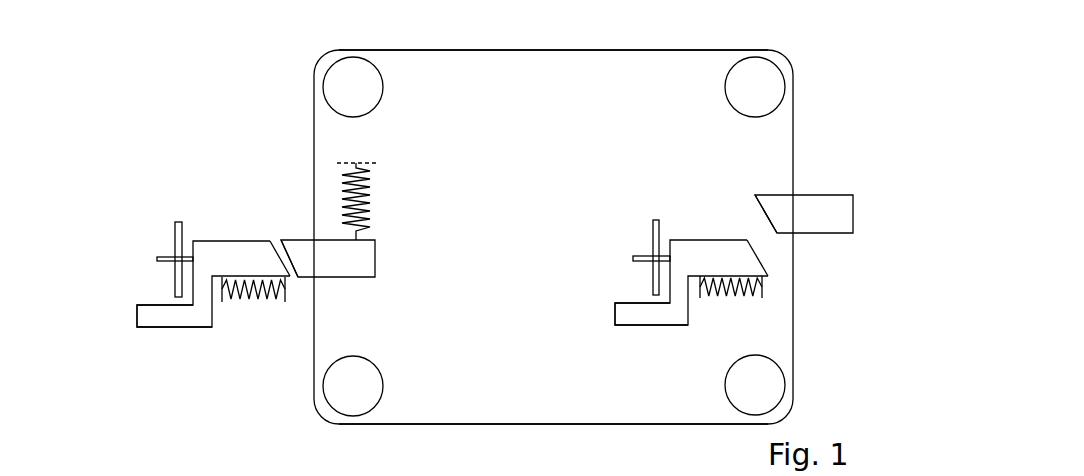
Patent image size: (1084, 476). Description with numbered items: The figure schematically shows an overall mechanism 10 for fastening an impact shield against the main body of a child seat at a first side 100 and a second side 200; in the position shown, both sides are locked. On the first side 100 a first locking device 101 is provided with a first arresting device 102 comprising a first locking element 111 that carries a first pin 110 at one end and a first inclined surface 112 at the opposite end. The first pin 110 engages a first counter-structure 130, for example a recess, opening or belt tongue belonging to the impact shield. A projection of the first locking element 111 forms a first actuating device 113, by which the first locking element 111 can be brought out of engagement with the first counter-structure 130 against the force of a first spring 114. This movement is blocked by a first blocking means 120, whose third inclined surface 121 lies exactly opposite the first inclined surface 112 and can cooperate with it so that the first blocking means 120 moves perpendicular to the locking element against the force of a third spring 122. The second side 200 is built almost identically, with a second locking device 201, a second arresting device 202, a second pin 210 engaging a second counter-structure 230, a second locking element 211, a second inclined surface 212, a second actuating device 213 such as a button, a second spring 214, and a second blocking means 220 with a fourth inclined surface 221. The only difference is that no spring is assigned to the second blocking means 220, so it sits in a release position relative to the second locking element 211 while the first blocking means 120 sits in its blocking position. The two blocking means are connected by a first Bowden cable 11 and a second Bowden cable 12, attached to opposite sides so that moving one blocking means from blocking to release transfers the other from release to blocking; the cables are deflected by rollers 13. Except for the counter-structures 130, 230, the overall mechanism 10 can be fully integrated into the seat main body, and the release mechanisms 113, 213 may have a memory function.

The overall mechanism 10 is at (275, 117).
The first Bowden cable 11 is at (543, 50).
The second Bowden cable 12 is at (477, 424).
The deflection roller 13 is at (350, 68).
The first side 100 is at (300, 158).
The first locking device 101 is at (258, 322).
The first arresting device 102 is at (157, 272).
The first pin 110 is at (157, 258).
The first locking element 111 is at (247, 252).
The first inclined surface 112 is at (281, 240).
The first actuating device 113 is at (160, 312).
The first spring 114 is at (230, 305).
The first blocking means 120 is at (375, 262).
The third inclined surface 121 is at (288, 298).
The third spring 122 is at (373, 188).
The first counter-structure 130 is at (173, 224).
The second side 200 is at (813, 348).
The second locking device 201 is at (697, 220).
The second arresting device 202 is at (608, 246).
The second pin 210 is at (635, 257).
The second locking element 211 is at (688, 240).
The second inclined surface 212 is at (766, 258).
The second actuating device 213 is at (622, 316).
The second spring 214 is at (712, 284).
The second blocking means 220 is at (815, 218).
The fourth inclined surface 221 is at (753, 202).
The second counter-structure 230 is at (652, 240).